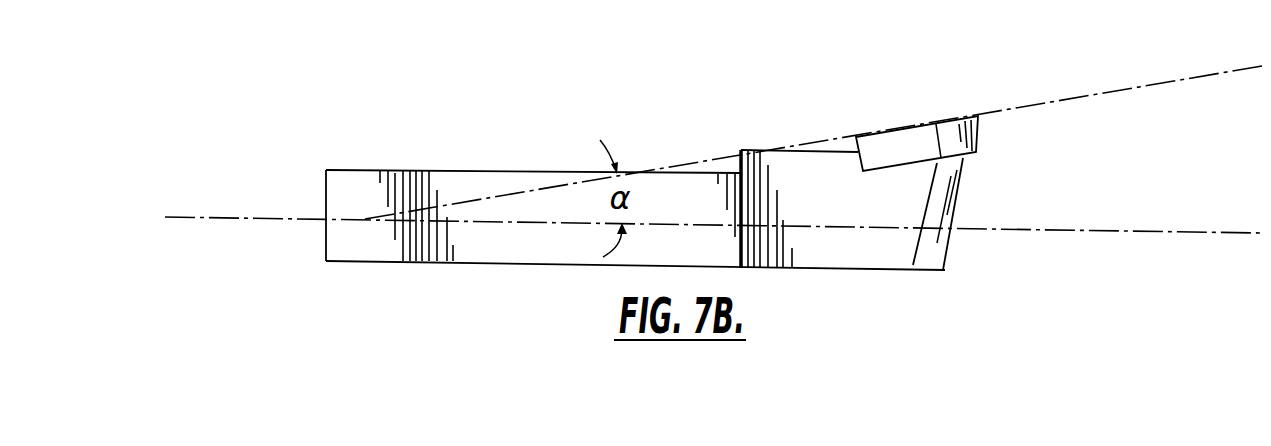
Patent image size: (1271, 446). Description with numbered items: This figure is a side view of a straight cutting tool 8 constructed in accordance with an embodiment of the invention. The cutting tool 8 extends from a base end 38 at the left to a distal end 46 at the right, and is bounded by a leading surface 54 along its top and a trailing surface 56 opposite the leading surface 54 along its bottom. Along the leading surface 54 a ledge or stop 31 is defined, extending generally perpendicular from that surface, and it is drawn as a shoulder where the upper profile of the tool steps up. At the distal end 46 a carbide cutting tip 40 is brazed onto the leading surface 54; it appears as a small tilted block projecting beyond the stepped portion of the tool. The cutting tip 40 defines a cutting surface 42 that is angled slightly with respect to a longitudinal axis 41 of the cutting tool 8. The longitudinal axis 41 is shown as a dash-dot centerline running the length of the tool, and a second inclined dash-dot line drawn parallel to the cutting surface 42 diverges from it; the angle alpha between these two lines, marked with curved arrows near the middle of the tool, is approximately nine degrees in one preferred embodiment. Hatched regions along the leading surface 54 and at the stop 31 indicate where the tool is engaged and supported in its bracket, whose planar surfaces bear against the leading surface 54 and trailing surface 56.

The cutting tool 8 is at (560, 172).
The stop 31 is at (736, 155).
The base end 38 is at (322, 262).
The cutting tip 40 is at (980, 127).
The longitudinal axis 41 is at (1123, 233).
The cutting surface 42 is at (896, 131).
The distal end 46 is at (948, 260).
The leading surface 54 is at (528, 172).
The trailing surface 56 is at (523, 265).